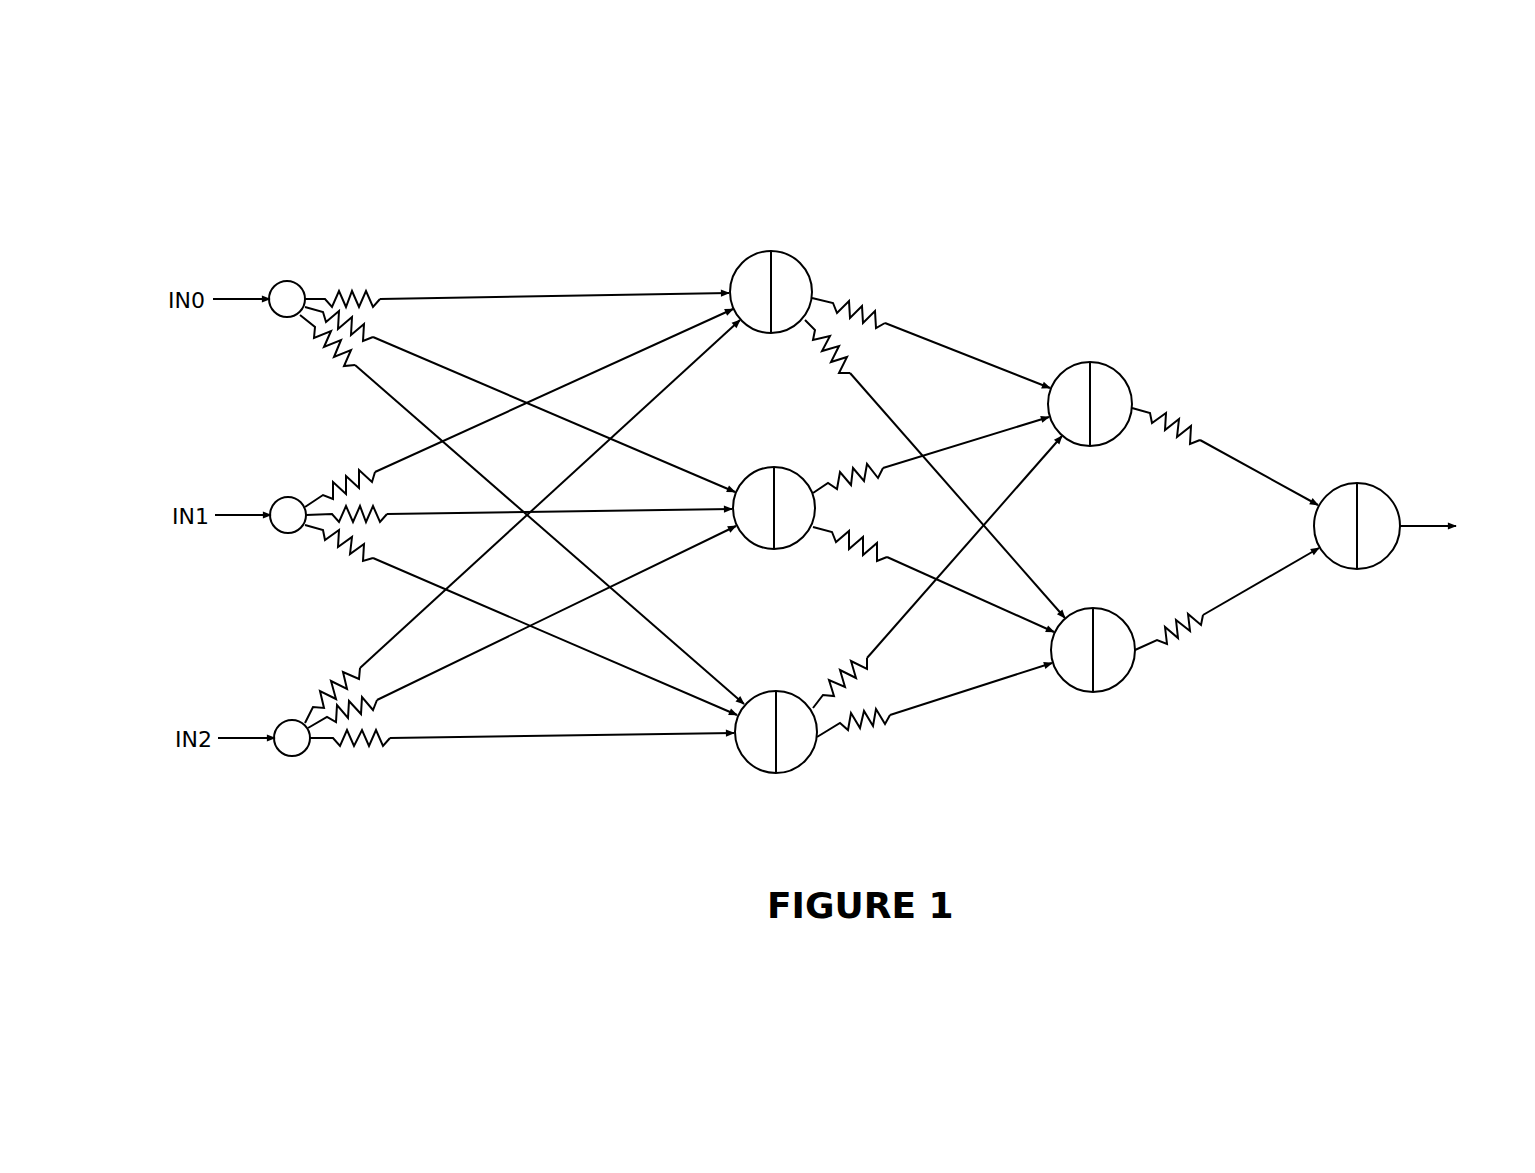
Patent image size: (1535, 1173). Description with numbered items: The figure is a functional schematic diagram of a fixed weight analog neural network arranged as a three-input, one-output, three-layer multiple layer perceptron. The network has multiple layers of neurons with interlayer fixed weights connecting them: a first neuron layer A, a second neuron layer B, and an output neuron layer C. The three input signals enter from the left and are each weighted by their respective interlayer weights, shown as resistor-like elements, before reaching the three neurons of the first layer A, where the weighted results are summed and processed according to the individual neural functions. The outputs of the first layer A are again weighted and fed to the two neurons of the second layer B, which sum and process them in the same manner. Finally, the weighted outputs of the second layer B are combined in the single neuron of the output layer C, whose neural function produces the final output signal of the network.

The first neuron layer A is at (338, 180).
The second neuron layer B is at (1042, 176).
The output neuron layer C is at (1133, 174).